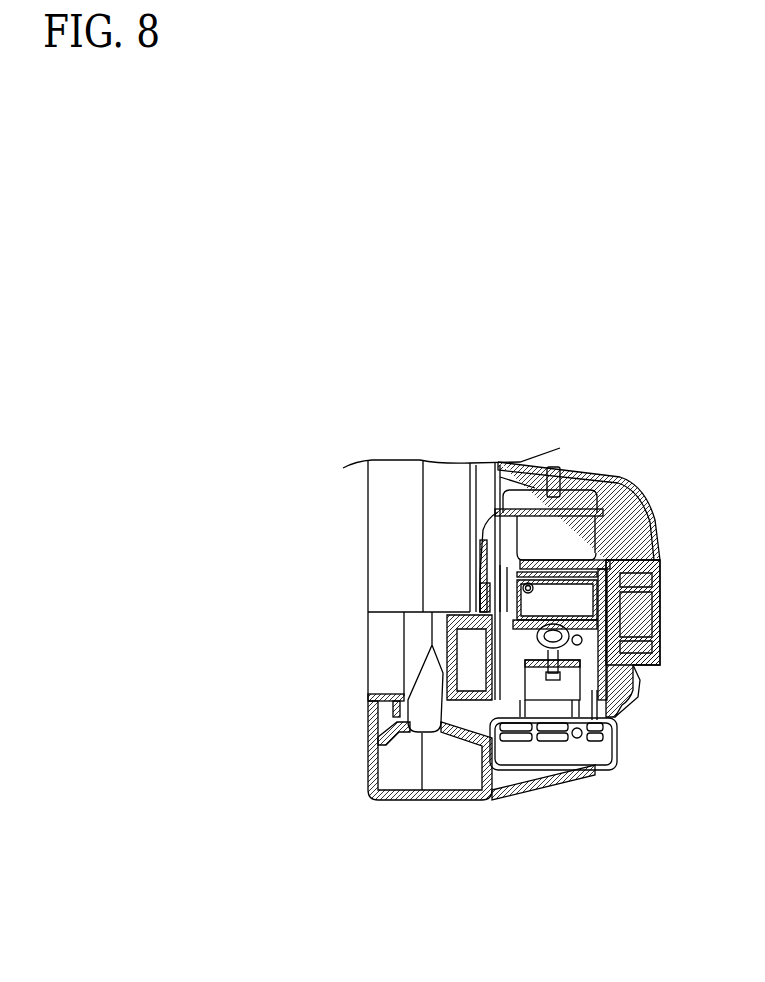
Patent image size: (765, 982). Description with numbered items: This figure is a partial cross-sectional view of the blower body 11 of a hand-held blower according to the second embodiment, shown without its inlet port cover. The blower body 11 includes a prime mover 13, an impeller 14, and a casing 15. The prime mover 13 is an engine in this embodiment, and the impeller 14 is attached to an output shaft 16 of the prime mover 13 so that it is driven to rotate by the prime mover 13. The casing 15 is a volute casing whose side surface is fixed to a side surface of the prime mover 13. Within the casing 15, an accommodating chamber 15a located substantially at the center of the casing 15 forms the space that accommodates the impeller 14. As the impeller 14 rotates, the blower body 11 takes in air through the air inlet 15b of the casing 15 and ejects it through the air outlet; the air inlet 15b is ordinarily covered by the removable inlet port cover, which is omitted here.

The blower body 11 is at (637, 482).
The prime mover 13 is at (609, 537).
The impeller 14 is at (431, 723).
The casing 15 is at (403, 800).
The accommodating chamber 15a is at (368, 737).
The air inlet 15b is at (382, 673).
The output shaft 16 is at (469, 657).